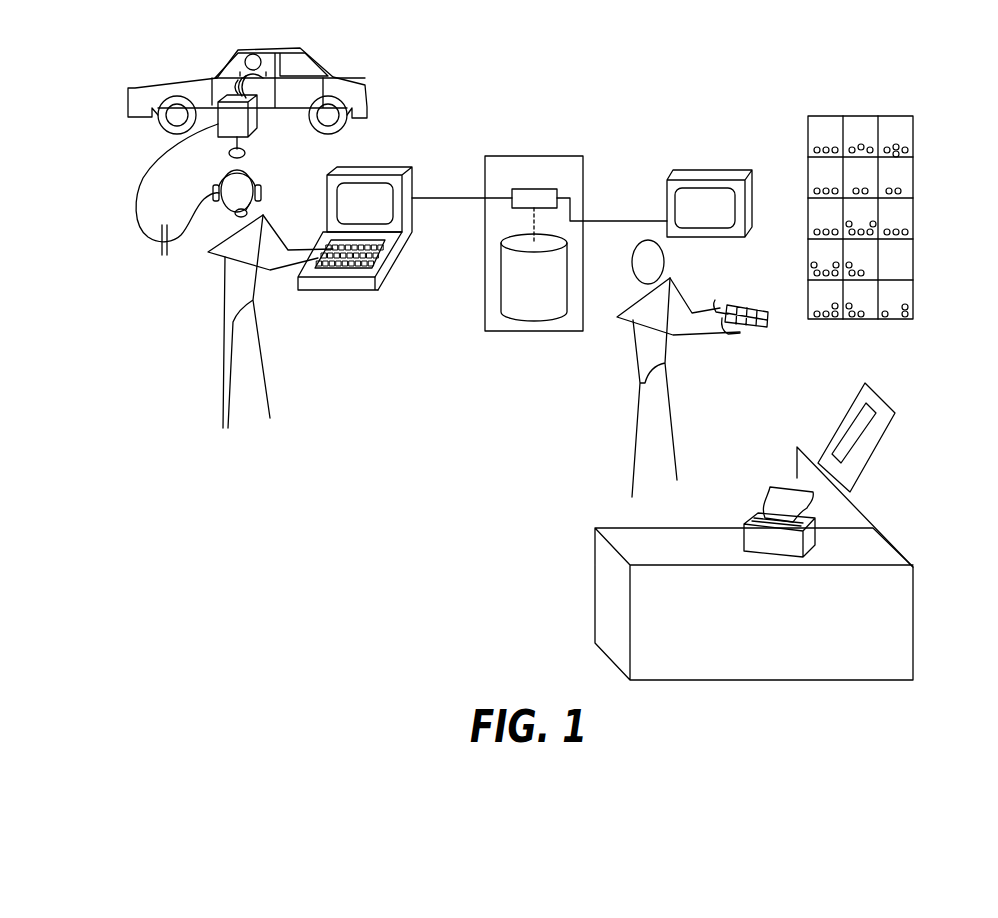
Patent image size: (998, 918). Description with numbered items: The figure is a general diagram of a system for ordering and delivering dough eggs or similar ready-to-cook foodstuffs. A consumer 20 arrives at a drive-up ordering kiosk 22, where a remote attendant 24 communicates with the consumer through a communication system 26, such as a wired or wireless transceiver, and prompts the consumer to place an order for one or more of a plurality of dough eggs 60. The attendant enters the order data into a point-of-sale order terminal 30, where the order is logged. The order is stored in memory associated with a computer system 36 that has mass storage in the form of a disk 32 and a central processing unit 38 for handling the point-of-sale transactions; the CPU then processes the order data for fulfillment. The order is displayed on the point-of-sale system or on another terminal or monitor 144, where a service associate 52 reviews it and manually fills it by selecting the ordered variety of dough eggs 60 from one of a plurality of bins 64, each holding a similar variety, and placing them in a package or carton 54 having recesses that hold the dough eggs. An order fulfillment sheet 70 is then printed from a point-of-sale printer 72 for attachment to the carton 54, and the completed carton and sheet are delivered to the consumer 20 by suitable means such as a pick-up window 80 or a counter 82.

The consumer 20 is at (246, 60).
The drive-up ordering kiosk 22 is at (248, 127).
The remote attendant 24 is at (227, 302).
The communication system 26 is at (139, 194).
The point-of-sale order terminal 30 is at (381, 193).
The disk 32 is at (523, 318).
The computer system 36 is at (533, 155).
The central processing unit 38 is at (558, 192).
The display monitor 144 is at (700, 178).
The service associate 52 is at (627, 372).
The carton 54 is at (748, 311).
The dough eggs 60 is at (901, 180).
The bins 64 is at (898, 118).
The order fulfillment sheet 70 is at (785, 495).
The point-of-sale printer 72 is at (757, 520).
The pick-up window 80 is at (870, 393).
The counter 82 is at (707, 557).